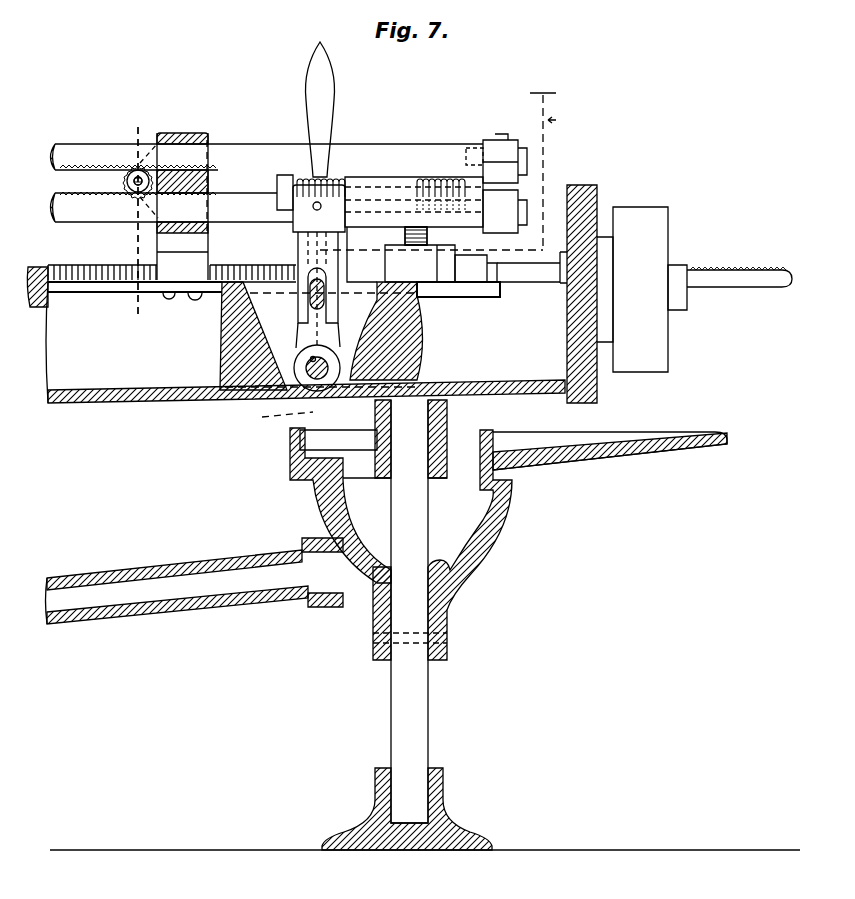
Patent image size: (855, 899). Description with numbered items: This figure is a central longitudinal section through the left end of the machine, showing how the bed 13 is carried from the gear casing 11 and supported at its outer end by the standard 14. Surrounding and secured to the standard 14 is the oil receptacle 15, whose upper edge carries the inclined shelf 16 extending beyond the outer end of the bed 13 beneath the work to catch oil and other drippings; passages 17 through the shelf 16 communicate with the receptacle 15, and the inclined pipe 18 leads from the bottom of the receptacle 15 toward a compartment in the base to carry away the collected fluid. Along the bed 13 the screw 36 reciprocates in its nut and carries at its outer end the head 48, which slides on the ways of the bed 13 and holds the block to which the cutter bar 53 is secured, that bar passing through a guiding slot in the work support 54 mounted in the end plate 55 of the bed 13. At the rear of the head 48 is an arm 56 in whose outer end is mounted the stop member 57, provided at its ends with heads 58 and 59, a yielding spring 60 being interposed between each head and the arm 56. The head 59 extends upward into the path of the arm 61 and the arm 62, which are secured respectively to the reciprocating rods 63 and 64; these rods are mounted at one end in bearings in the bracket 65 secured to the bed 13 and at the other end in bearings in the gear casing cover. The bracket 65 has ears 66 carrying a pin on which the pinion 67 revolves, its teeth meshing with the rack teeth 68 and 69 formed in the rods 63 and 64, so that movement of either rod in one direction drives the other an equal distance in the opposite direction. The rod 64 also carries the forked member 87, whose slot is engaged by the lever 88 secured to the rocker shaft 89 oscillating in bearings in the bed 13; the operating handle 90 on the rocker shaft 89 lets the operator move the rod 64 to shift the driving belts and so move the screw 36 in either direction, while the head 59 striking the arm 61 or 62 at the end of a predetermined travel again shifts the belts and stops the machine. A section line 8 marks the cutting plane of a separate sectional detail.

The section line 8 is at (142, 229).
The gear casing 11 is at (398, 252).
The bed 13 is at (142, 398).
The standard 14 is at (428, 710).
The oil receptacle 15 is at (497, 548).
The inclined shelf 16 is at (602, 462).
The passages 17 is at (462, 470).
The inclined pipe 18 is at (182, 612).
The screw 36 is at (35, 268).
The head 48 is at (425, 272).
The cutter bar 53 is at (740, 275).
The work support 54 is at (680, 273).
The end plate 55 is at (585, 190).
The arm 56 is at (358, 233).
The stop member 57 is at (420, 178).
The head 58 is at (283, 173).
The head 59 is at (466, 148).
The yielding spring 60 is at (330, 173).
The arm 61 is at (510, 148).
The arm 62 is at (505, 225).
The reciprocating rod 63 is at (235, 150).
The reciprocating rod 64 is at (237, 222).
The bracket 65 is at (188, 133).
The ears 66 is at (125, 181).
The pinion 67 is at (136, 172).
The rack teeth 68 is at (83, 150).
The rack teeth 69 is at (98, 200).
The forked member 87 is at (297, 248).
The lever 88 is at (332, 342).
The rocker shaft 89 is at (322, 385).
The operating handle 90 is at (328, 78).